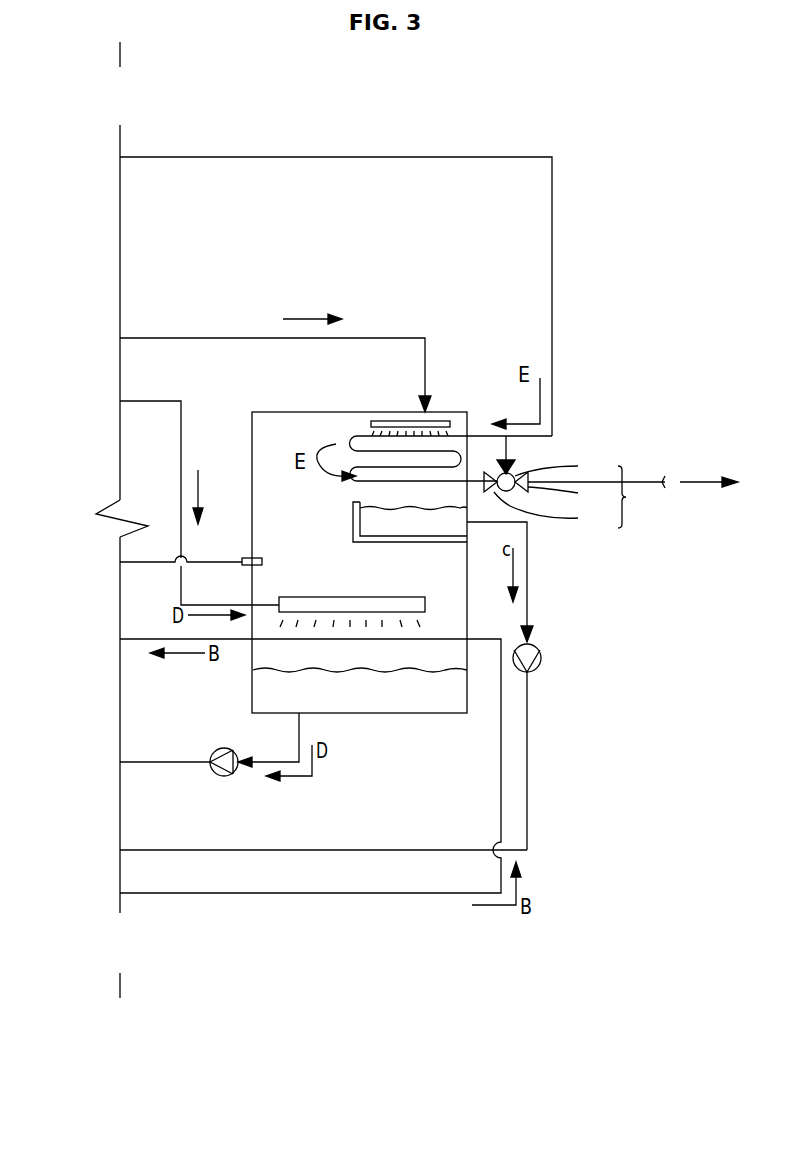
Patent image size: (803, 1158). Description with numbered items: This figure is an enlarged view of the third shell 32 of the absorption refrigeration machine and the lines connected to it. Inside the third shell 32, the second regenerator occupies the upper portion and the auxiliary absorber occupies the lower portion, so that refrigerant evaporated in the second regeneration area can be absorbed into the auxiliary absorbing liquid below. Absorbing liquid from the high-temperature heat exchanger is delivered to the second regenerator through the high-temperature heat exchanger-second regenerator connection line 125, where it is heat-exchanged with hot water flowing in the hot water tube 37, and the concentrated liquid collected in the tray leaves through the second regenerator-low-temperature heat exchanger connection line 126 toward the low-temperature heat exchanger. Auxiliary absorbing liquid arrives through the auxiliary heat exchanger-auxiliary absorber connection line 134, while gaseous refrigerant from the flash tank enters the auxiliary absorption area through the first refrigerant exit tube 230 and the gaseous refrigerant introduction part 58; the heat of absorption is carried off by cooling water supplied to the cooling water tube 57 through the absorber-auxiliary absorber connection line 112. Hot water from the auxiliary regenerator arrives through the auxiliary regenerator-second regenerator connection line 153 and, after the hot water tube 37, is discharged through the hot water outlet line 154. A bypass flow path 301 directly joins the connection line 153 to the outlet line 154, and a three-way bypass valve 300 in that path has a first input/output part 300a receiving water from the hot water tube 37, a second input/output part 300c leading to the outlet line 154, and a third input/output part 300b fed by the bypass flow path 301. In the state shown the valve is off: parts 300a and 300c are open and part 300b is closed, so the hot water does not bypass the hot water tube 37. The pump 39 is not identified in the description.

The auxiliary regenerator-second regenerator connection line 153 is at (552, 337).
The high-temperature heat exchanger-second regenerator connection line 125 is at (425, 370).
The third shell 32 is at (297, 412).
The hot water tube 37 is at (358, 437).
The auxiliary heat exchanger-auxiliary absorber connection line 134 is at (181, 445).
The first refrigerant exit tube 230 is at (140, 562).
The gaseous refrigerant introduction part 58 is at (258, 558).
The cooling water tube 57 is at (447, 640).
The second regenerator-low-temperature heat exchanger connection line 126 is at (527, 573).
The pump 39 is at (541, 655).
The bypass flow path 301 is at (505, 450).
The third input/output part 300b is at (565, 467).
The second input/output part 300c is at (572, 492).
The first input/output part 300a is at (555, 512).
The bypass valve 300 is at (638, 497).
The hot water outlet line 154 is at (652, 480).
The absorber-auxiliary absorber connection line 112 is at (383, 853).